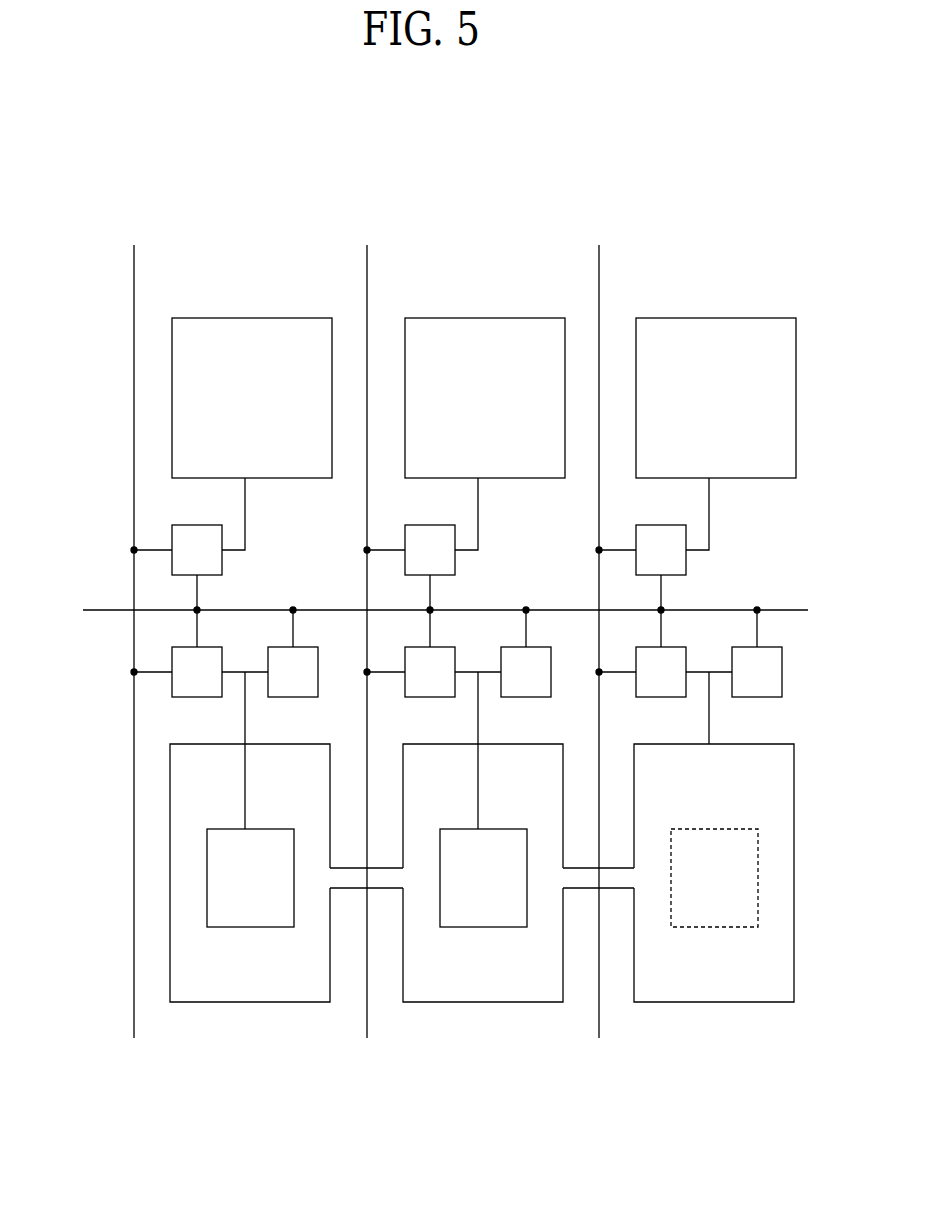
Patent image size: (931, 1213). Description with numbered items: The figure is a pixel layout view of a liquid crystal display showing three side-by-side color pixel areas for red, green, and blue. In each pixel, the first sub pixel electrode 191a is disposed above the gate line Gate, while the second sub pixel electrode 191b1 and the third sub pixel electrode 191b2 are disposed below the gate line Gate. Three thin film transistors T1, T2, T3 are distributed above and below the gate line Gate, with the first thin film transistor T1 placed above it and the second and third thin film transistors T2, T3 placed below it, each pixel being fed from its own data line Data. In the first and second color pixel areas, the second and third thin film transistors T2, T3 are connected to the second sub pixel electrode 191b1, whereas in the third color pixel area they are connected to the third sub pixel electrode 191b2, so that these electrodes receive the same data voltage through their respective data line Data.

The first sub pixel electrode 191a is at (484, 398).
The second sub pixel electrode 191b1 is at (482, 878).
The third sub pixel electrode 191b2 is at (482, 873).
The first thin film transistor T1 is at (429, 550).
The second thin film transistor T2 is at (429, 672).
The third thin film transistor T3 is at (525, 672).
The data line Data is at (356, 625).
The gate line Gate is at (421, 607).